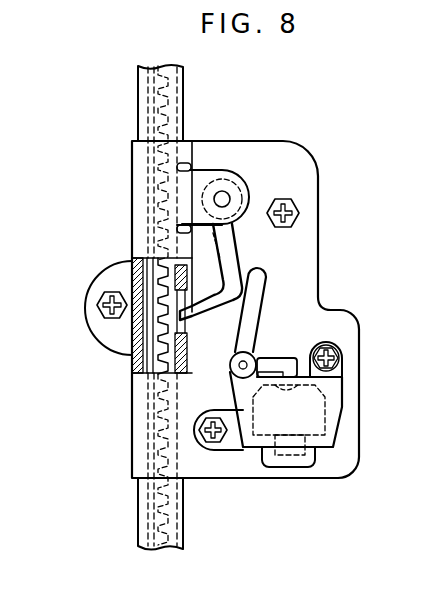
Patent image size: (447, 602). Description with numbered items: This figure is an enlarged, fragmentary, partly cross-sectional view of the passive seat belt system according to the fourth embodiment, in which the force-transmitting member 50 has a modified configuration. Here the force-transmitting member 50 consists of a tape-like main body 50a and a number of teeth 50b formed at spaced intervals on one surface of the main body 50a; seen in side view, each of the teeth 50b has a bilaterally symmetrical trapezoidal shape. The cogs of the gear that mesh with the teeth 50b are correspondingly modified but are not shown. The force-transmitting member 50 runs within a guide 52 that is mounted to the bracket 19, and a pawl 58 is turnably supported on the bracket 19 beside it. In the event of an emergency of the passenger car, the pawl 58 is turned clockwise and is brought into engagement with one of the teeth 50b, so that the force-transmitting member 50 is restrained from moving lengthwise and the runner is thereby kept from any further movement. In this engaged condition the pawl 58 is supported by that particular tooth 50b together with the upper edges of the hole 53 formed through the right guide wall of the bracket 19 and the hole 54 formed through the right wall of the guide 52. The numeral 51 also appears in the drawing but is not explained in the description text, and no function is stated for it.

The bracket 19 is at (317, 171).
The force-transmitting member 50 is at (107, 346).
The main body 50a is at (155, 284).
The teeth 50b is at (176, 336).
The support plate 51 is at (186, 467).
The guide 52 is at (137, 518).
The hole 53 is at (186, 378).
The hole 54 is at (165, 372).
The pawl 58 is at (233, 257).